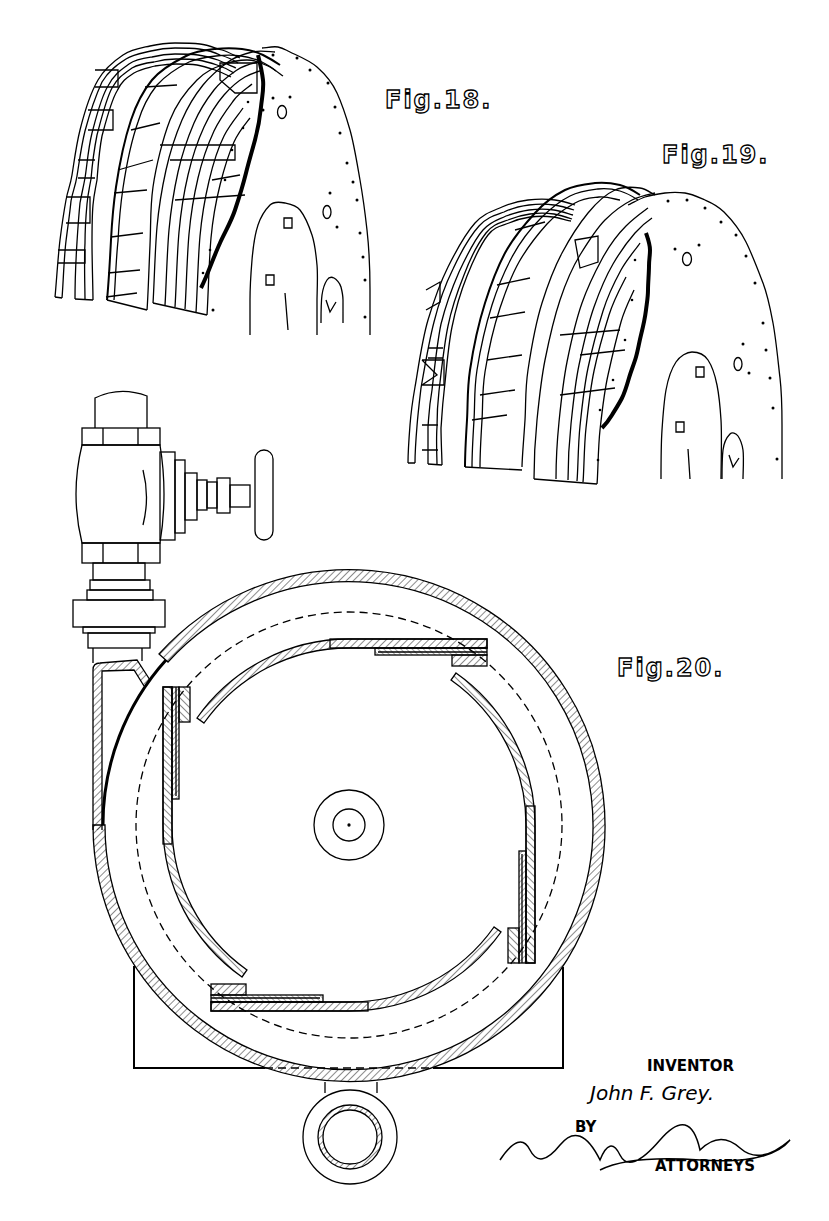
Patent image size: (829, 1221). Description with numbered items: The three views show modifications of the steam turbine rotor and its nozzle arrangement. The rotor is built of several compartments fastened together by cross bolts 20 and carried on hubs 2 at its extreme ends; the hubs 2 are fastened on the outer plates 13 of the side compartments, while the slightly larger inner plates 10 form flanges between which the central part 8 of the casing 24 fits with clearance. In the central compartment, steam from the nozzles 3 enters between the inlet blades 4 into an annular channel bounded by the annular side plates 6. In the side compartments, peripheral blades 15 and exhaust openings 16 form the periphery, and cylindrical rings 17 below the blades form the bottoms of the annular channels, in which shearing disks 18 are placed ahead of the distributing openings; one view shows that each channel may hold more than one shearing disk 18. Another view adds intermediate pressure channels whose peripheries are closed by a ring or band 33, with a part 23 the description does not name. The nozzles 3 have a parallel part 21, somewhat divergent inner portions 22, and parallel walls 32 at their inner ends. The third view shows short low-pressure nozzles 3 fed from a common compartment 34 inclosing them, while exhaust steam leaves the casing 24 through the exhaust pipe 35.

In FIG. 18, the hubs 2 is at (313, 280).
In FIG. 19, the hubs 2 is at (718, 428).
In FIG. 20, the nozzles 3 is at (498, 652).
In FIG. 18, the inlet blades 4 is at (210, 52).
In FIG. 19, the inlet blades 4 is at (563, 327).
In FIG. 18, the annular side plates 6 is at (125, 170).
In FIG. 19, the annular side plates 6 is at (510, 310).
In FIG. 20, the central part of the casing 8 is at (489, 722).
In FIG. 18, the inner plates 10 is at (188, 44).
In FIG. 19, the inner plates 10 is at (580, 190).
In FIG. 18, the outer plates 13 is at (325, 97).
In FIG. 19, the outer plates 13 is at (755, 305).
In FIG. 18, the peripheral blades 15 is at (108, 97).
In FIG. 19, the peripheral blades 15 is at (448, 343).
In FIG. 18, the exhaust openings 16 is at (92, 120).
In FIG. 19, the exhaust openings 16 is at (423, 377).
In FIG. 18, the cylindrical rings 17 is at (215, 182).
In FIG. 19, the cylindrical rings 17 is at (628, 345).
In FIG. 18, the shearing disks 18 is at (86, 176).
In FIG. 19, the shearing disks 18 is at (432, 432).
In FIG. 18, the cross bolts 20 is at (287, 113).
In FIG. 19, the cross bolts 20 is at (690, 265).
In FIG. 20, the parallel part of the nozzles 21 is at (470, 667).
In FIG. 20, the divergent inner portions 22 is at (442, 658).
In FIG. 18, the key 23 is at (250, 72).
In FIG. 19, the key 23 is at (600, 296).
In FIG. 20, the casing 24 is at (134, 1052).
In FIG. 20, the parallel inner end walls 32 is at (420, 652).
In FIG. 19, the ring or band 33 is at (487, 256).
In FIG. 20, the common compartment 34 is at (428, 592).
In FIG. 20, the exhaust pipe 35 is at (382, 1135).